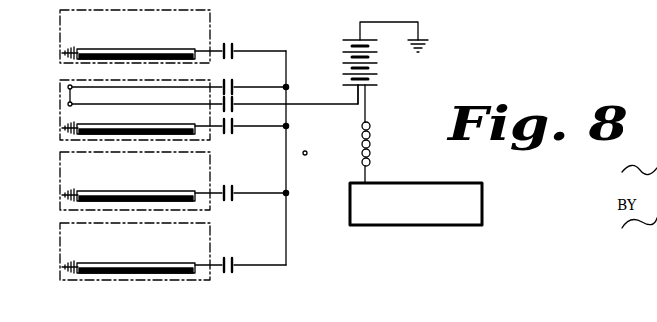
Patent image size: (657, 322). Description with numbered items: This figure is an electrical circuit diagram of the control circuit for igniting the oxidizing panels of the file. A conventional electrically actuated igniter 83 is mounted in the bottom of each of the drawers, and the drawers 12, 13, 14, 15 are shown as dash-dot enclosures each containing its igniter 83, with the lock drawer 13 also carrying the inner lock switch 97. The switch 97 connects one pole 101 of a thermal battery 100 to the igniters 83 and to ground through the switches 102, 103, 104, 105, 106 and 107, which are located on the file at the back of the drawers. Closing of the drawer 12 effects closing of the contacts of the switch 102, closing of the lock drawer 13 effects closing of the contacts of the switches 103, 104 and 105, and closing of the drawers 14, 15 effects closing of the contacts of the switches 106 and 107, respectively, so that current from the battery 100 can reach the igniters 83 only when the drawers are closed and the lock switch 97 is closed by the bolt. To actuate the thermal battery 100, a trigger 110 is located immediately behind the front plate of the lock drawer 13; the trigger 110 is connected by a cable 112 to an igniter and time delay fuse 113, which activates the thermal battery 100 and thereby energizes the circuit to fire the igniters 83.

The drawer 12 is at (58, 33).
The lock drawer 13 is at (60, 134).
The drawer 14 is at (60, 190).
The drawer 15 is at (62, 257).
The igniter 83 is at (143, 52).
The inner lock switch 97 is at (62, 101).
The thermal battery 100 is at (382, 76).
The pole 101 is at (357, 88).
The switch 102 is at (252, 30).
The switch 103 is at (236, 82).
The switch 104 is at (222, 103).
The switch 105 is at (236, 132).
The switch 106 is at (236, 189).
The switch 107 is at (241, 261).
The trigger 110 is at (305, 151).
The cable 112 is at (350, 200).
The igniter and time delay fuse 113 is at (426, 225).